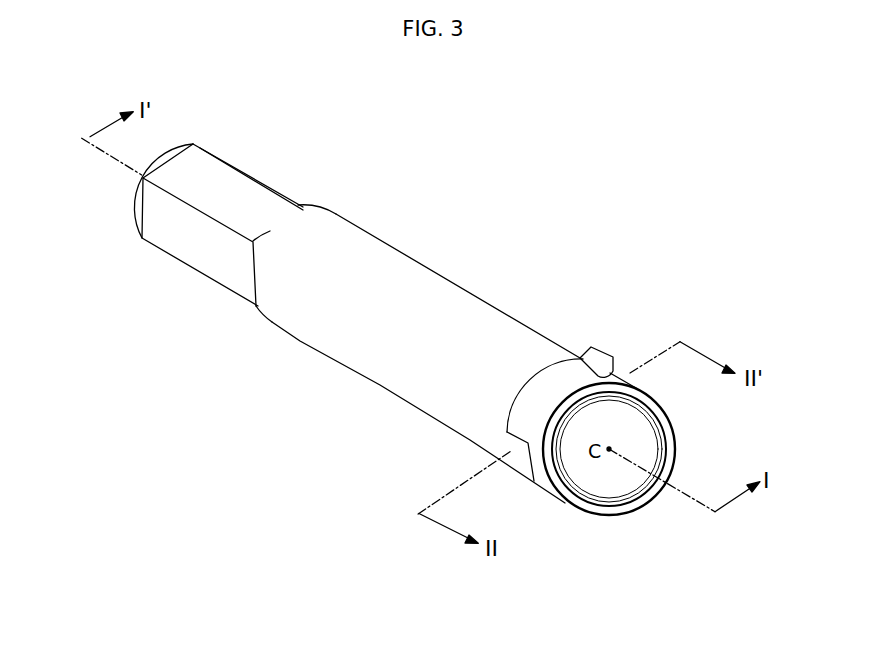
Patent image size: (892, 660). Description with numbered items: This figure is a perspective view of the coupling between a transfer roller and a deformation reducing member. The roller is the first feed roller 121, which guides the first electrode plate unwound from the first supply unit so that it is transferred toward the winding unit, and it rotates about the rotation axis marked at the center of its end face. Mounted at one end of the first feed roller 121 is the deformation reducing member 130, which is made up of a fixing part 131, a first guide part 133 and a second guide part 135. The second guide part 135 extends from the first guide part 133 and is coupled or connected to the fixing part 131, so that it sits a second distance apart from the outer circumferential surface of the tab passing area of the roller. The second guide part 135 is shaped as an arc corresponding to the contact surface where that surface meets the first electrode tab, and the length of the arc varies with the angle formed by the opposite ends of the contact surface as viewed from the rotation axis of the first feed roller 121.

The first feed roller 121 is at (428, 282).
The deformation reducing member 130 is at (567, 291).
The fixing part 131 is at (627, 378).
The first guide part 133 is at (600, 360).
The second guide part 135 is at (550, 376).